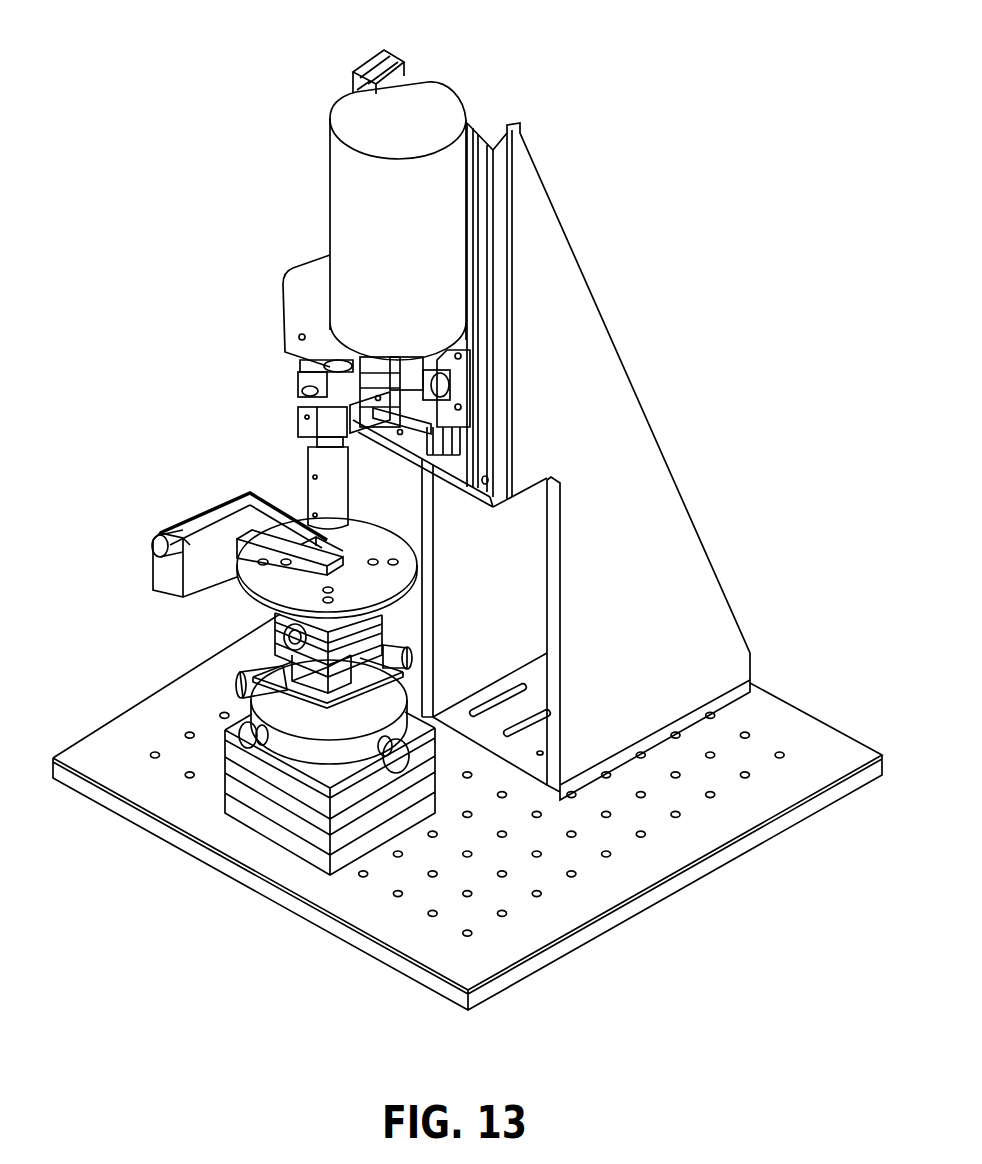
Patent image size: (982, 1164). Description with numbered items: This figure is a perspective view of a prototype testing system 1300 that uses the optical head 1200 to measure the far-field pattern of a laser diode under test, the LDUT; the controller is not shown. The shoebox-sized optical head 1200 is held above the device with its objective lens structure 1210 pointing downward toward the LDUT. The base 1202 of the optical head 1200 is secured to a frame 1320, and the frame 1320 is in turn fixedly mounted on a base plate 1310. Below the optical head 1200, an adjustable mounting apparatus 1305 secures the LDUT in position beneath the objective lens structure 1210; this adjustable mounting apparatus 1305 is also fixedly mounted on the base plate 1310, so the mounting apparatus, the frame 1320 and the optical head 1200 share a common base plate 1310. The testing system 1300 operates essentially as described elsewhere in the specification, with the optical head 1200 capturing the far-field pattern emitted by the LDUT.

The testing system 1300 is at (190, 123).
The optical head 1200 is at (320, 238).
The base 1202 is at (353, 71).
The objective lens structure 1210 is at (310, 485).
The adjustable mounting apparatus 1305 is at (282, 598).
The base plate 1310 is at (330, 910).
The frame 1320 is at (543, 193).
The laser diode under test LDUT is at (338, 540).